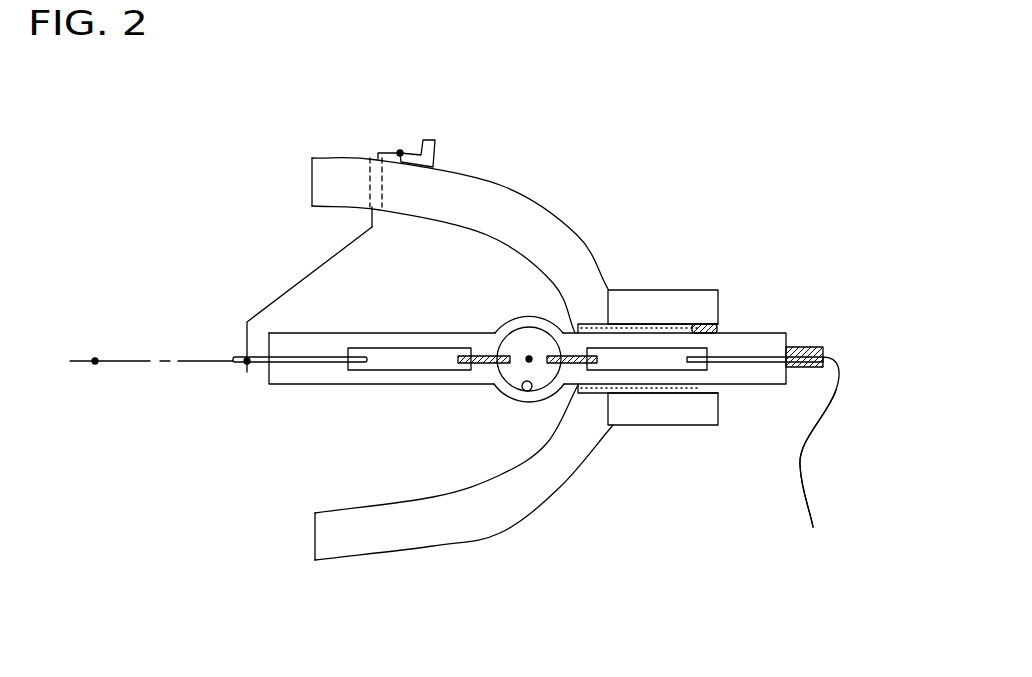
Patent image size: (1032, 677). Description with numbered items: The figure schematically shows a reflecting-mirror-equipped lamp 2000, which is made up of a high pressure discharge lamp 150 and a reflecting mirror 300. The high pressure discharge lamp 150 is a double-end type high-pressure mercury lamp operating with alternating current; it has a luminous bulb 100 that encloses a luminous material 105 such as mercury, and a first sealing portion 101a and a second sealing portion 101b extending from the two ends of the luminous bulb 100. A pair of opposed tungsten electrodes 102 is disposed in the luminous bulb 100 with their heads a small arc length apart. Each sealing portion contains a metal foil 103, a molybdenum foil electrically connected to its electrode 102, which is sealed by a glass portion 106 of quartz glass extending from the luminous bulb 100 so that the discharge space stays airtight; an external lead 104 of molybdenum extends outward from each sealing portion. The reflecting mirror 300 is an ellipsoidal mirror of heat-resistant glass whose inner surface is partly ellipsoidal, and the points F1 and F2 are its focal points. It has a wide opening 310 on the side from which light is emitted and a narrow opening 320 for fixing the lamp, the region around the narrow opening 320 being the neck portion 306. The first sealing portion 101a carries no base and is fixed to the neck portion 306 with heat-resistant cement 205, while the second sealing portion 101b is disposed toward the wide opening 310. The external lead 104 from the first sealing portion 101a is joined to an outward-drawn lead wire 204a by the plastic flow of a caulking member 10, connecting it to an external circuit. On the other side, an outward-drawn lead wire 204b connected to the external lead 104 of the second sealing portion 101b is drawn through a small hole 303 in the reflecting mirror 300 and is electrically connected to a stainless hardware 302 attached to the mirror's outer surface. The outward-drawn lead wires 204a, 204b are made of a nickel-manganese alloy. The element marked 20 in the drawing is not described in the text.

The reflecting-mirror-equipped lamp 2000 is at (532, 530).
The reflecting mirror 300 is at (516, 195).
The stainless hardware 302 is at (445, 135).
The small hole 303 is at (372, 156).
The neck portion 306 is at (692, 297).
The wide opening 310 is at (312, 245).
The narrow opening 320 is at (712, 327).
The luminous bulb 100 is at (532, 403).
The first sealing portion 101a is at (752, 384).
The second sealing portion 101b is at (342, 387).
The electrodes 102 is at (482, 352).
The metal foils 103 is at (415, 370).
The external lead 104 is at (305, 364).
The luminous material 105 is at (523, 391).
The glass portions 106 is at (411, 333).
The high pressure discharge lamp 150 is at (537, 313).
The caulking member 10 is at (807, 348).
The power supply cable 20 is at (842, 341).
The outward-drawn lead wire 204a is at (808, 500).
The outward-drawn lead wire 204b is at (335, 253).
The heat-resistant cement 205 is at (665, 395).
The focal point F1 is at (527, 362).
The focal point F2 is at (93, 366).